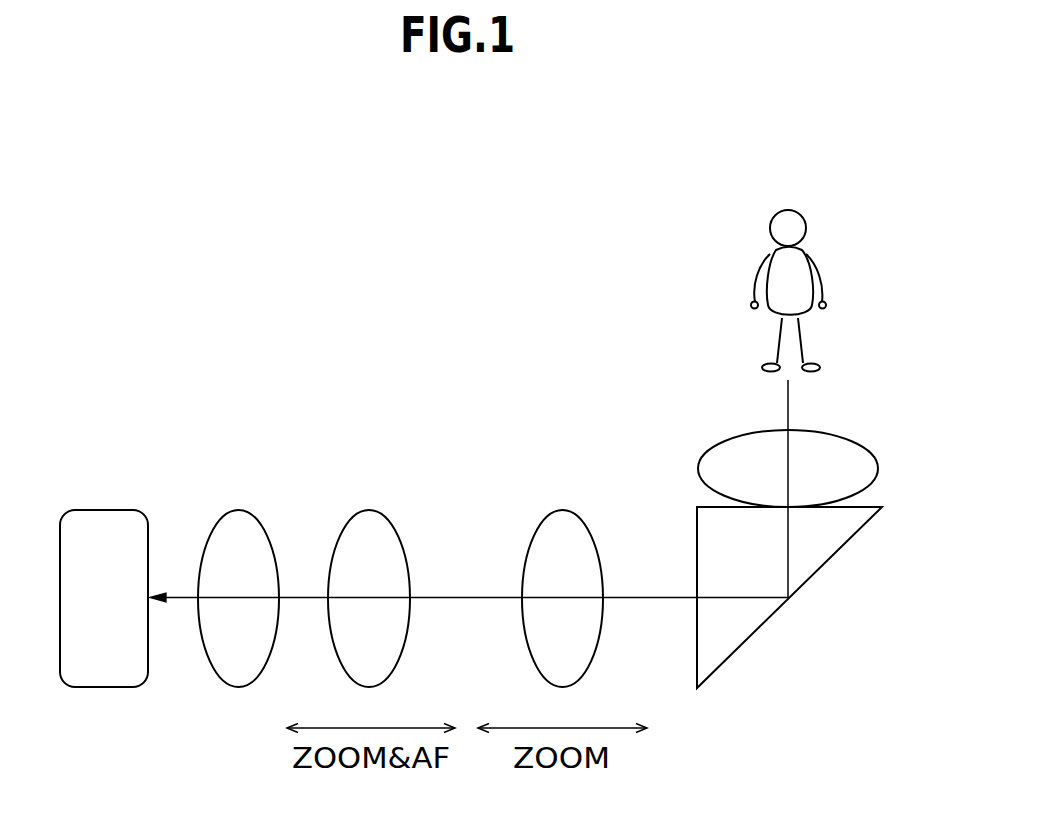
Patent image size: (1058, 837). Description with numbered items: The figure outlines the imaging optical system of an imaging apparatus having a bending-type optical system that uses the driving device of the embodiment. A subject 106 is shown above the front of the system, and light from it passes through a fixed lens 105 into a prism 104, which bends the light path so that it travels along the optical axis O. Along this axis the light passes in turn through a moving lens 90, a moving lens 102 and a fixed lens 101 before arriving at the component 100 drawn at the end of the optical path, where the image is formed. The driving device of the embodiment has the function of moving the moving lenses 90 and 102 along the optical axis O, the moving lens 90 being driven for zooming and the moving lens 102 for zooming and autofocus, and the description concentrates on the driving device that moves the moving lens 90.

The image pickup element 100 is at (110, 510).
The fixed lens 101 is at (240, 510).
The moving lens 102 is at (368, 510).
The moving lens 90 is at (563, 510).
The prism 104 is at (847, 545).
The fixed lens 105 is at (850, 437).
The object 106 is at (818, 262).
The optical axis O is at (650, 597).